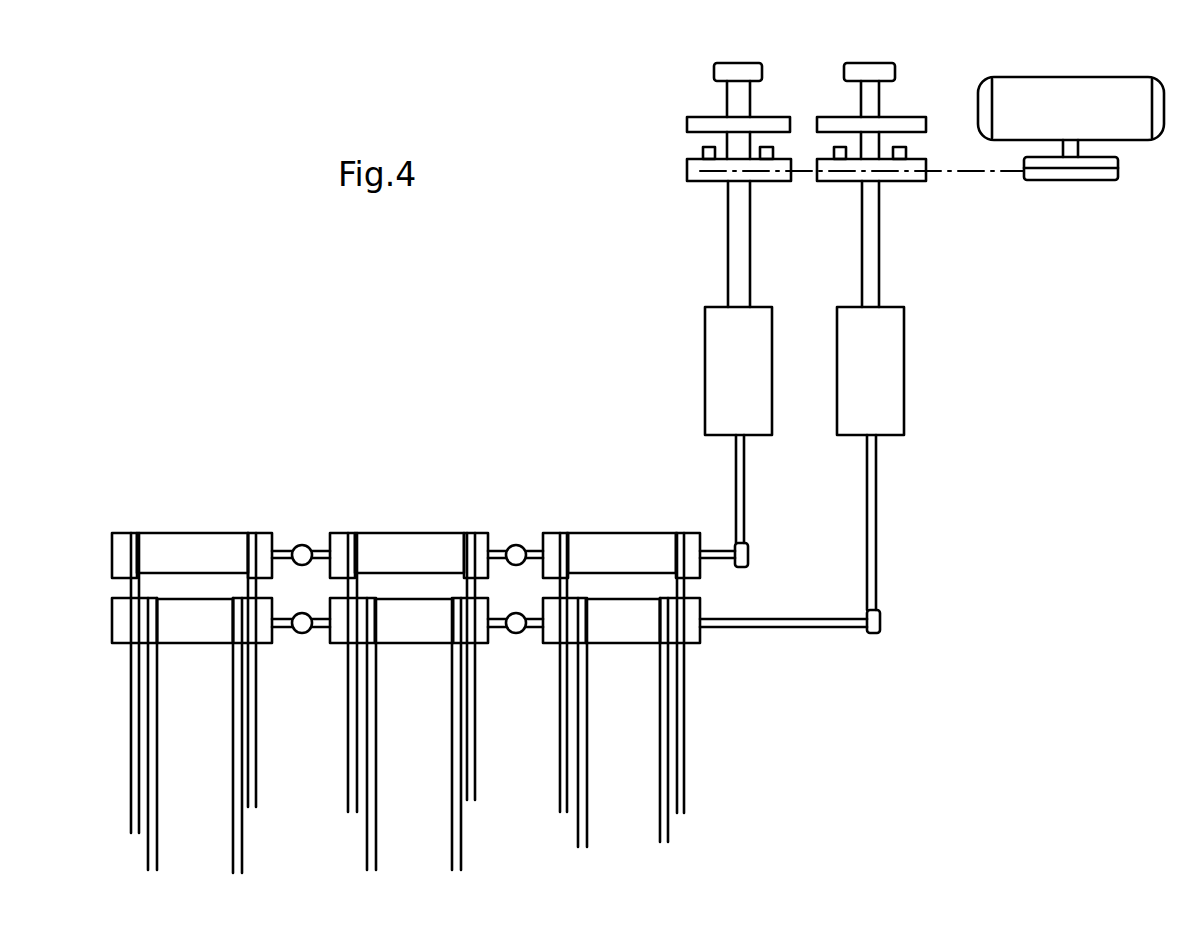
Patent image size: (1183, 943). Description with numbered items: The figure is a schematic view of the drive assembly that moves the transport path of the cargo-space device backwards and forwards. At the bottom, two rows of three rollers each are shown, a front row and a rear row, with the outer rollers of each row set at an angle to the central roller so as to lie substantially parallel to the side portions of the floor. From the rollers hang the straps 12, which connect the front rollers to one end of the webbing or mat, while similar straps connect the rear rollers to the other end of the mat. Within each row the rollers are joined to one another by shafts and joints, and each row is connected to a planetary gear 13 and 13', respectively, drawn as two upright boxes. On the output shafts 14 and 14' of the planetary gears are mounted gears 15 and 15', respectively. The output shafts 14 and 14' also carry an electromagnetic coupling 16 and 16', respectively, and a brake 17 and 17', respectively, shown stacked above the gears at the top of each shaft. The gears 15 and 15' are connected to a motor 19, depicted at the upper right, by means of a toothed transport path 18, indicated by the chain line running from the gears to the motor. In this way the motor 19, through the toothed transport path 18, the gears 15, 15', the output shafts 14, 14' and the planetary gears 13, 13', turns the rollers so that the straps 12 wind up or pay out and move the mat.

The straps 12 is at (367, 764).
The planetary gear 13 is at (870, 458).
The planetary gear 13' is at (738, 425).
The output shaft 14 is at (848, 244).
The output shaft 14' is at (713, 244).
The gear 15 is at (878, 184).
The gear 15' is at (720, 184).
The electromagnetic coupling 16 is at (882, 121).
The electromagnetic coupling 16' is at (721, 121).
The brake 17 is at (872, 69).
The brake 17' is at (757, 69).
The toothed transport path 18 is at (1007, 168).
The motor 19 is at (1110, 95).